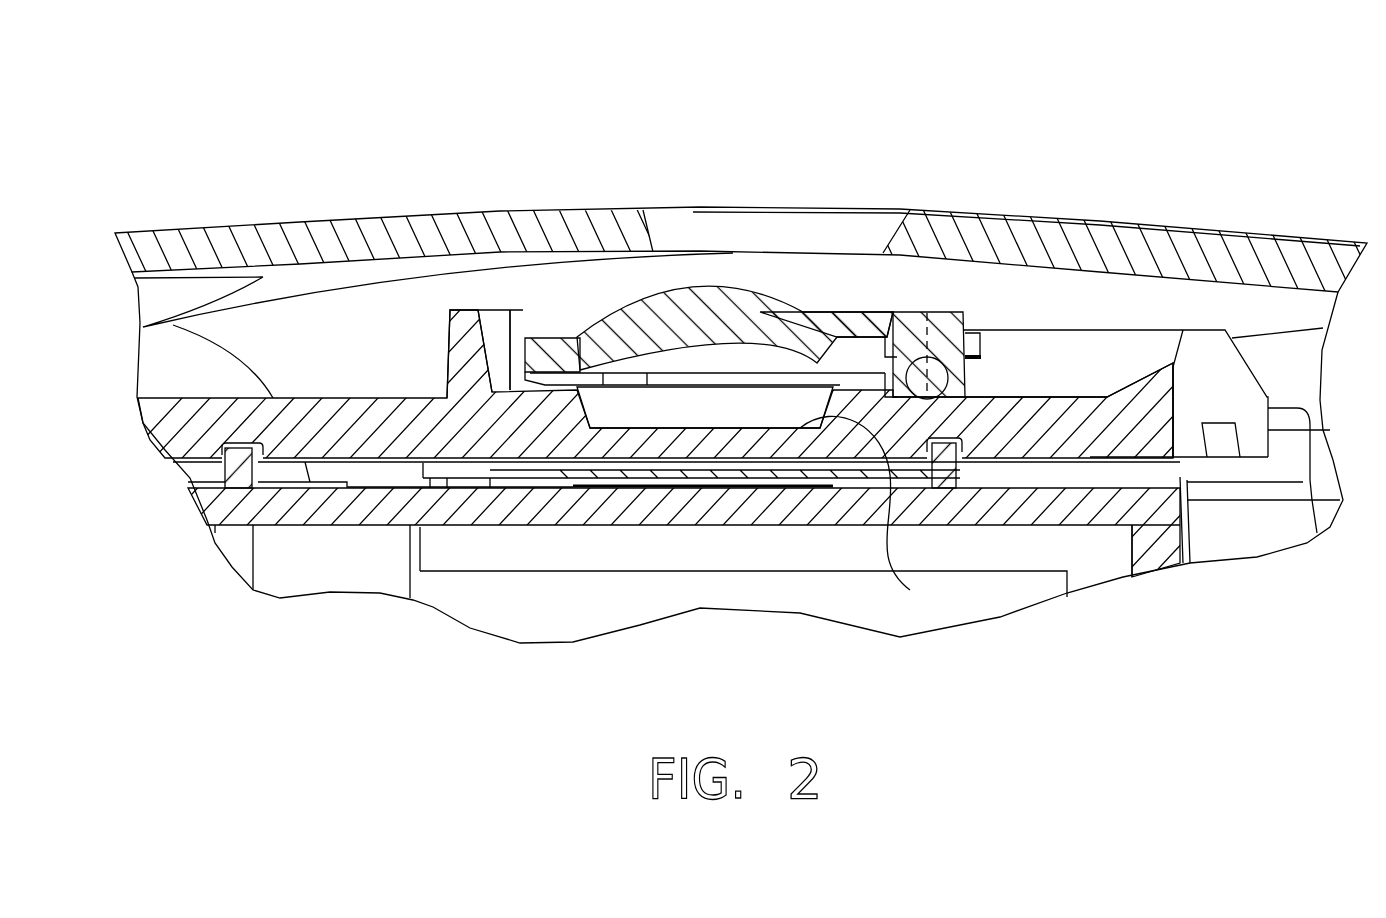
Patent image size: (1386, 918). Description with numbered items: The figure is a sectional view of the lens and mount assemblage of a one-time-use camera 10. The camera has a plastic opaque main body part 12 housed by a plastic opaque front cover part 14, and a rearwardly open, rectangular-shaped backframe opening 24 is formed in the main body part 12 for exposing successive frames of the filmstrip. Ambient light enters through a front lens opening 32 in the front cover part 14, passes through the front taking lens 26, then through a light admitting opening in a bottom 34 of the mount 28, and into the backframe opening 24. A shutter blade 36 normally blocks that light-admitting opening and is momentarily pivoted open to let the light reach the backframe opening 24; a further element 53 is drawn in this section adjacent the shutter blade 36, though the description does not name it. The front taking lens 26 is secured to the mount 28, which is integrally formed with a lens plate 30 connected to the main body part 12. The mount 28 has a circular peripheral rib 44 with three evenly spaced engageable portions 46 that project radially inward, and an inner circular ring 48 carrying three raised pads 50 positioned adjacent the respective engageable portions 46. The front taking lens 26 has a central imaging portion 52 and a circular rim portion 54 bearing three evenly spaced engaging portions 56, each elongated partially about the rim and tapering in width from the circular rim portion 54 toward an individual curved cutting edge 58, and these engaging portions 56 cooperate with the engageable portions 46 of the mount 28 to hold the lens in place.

The one-time-use camera 10 is at (135, 135).
The main body part 12 is at (198, 517).
The front cover part 14 is at (318, 208).
The backframe opening 24 is at (705, 595).
The front taking lens 26 is at (632, 292).
The mount 28 is at (417, 383).
The lens plate 30 is at (233, 410).
The front lens opening 32 is at (882, 222).
The bottom 34 is at (879, 516).
The shutter blade 36 is at (660, 478).
The circular peripheral rib 44 is at (445, 340).
The engageable portions 46 is at (903, 320).
The inner circular ring 48 is at (513, 355).
The raised pads 50 is at (840, 360).
The central imaging portion 52 is at (700, 292).
The contact 53 is at (717, 448).
The circular rim portion 54 is at (548, 332).
The engaging portions 56 is at (965, 393).
The cutting edges 58 is at (970, 376).